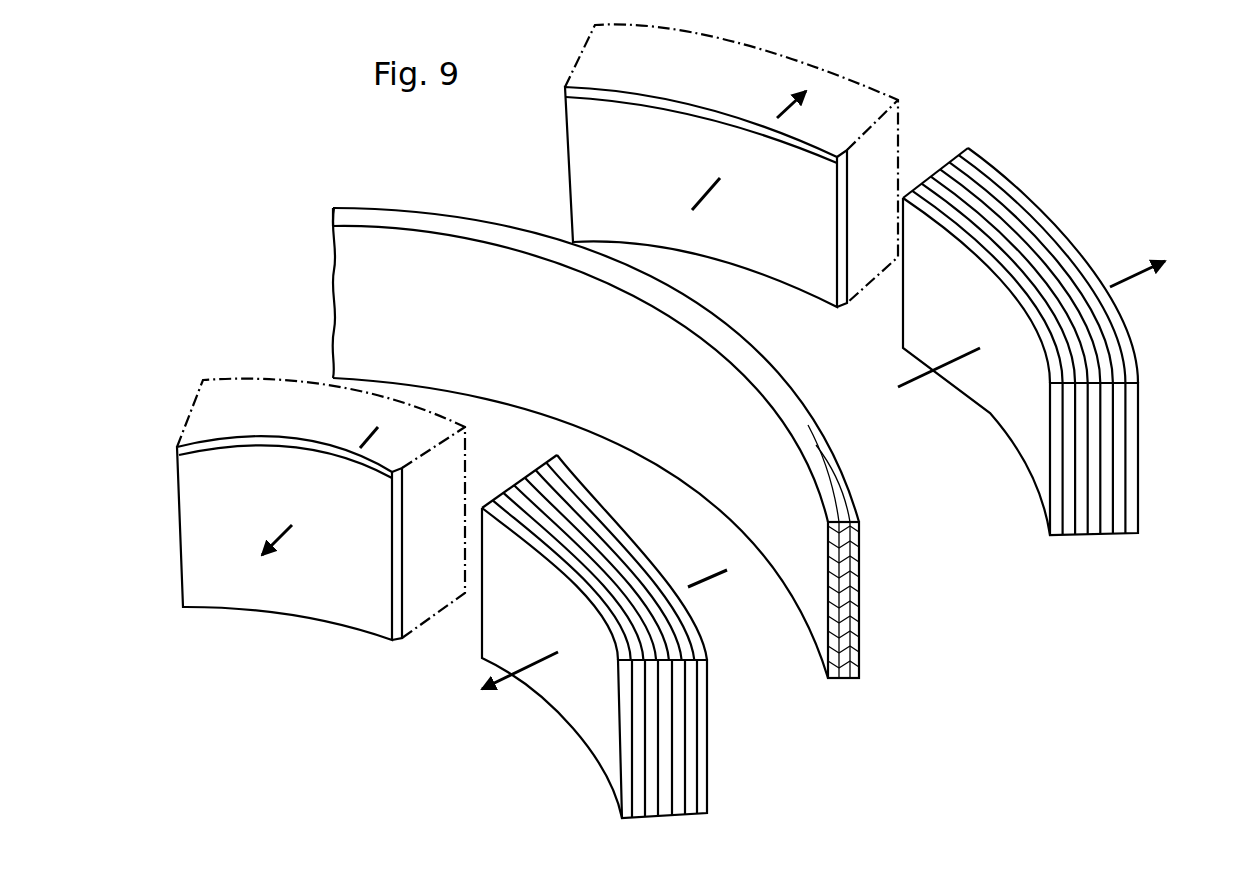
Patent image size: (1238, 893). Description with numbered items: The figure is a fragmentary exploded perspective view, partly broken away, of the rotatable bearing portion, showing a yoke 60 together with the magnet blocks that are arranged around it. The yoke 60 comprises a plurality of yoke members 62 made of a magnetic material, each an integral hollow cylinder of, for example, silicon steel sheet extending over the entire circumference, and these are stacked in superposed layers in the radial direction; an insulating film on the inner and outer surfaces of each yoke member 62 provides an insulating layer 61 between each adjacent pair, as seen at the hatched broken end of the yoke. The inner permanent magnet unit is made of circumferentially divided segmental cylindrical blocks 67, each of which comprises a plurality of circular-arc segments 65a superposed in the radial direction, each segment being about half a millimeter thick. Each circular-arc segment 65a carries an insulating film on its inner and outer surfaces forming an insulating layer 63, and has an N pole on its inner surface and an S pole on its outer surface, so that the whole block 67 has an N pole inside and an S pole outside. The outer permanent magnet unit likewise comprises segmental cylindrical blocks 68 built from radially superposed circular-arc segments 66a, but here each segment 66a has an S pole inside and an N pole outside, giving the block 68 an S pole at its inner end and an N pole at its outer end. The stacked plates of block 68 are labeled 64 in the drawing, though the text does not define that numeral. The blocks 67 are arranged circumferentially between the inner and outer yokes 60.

The yoke 60 is at (639, 477).
The insulating layer 61 is at (840, 682).
The yoke member 62 is at (859, 640).
The insulating layer 63 is at (633, 760).
The magnetic plate stack 64 is at (1128, 418).
The circular-arc segment 65a is at (338, 600).
The circular-arc segment 66a is at (785, 265).
The segmental cylindrical block 67 is at (485, 560).
The segmental cylindrical block 68 is at (890, 309).